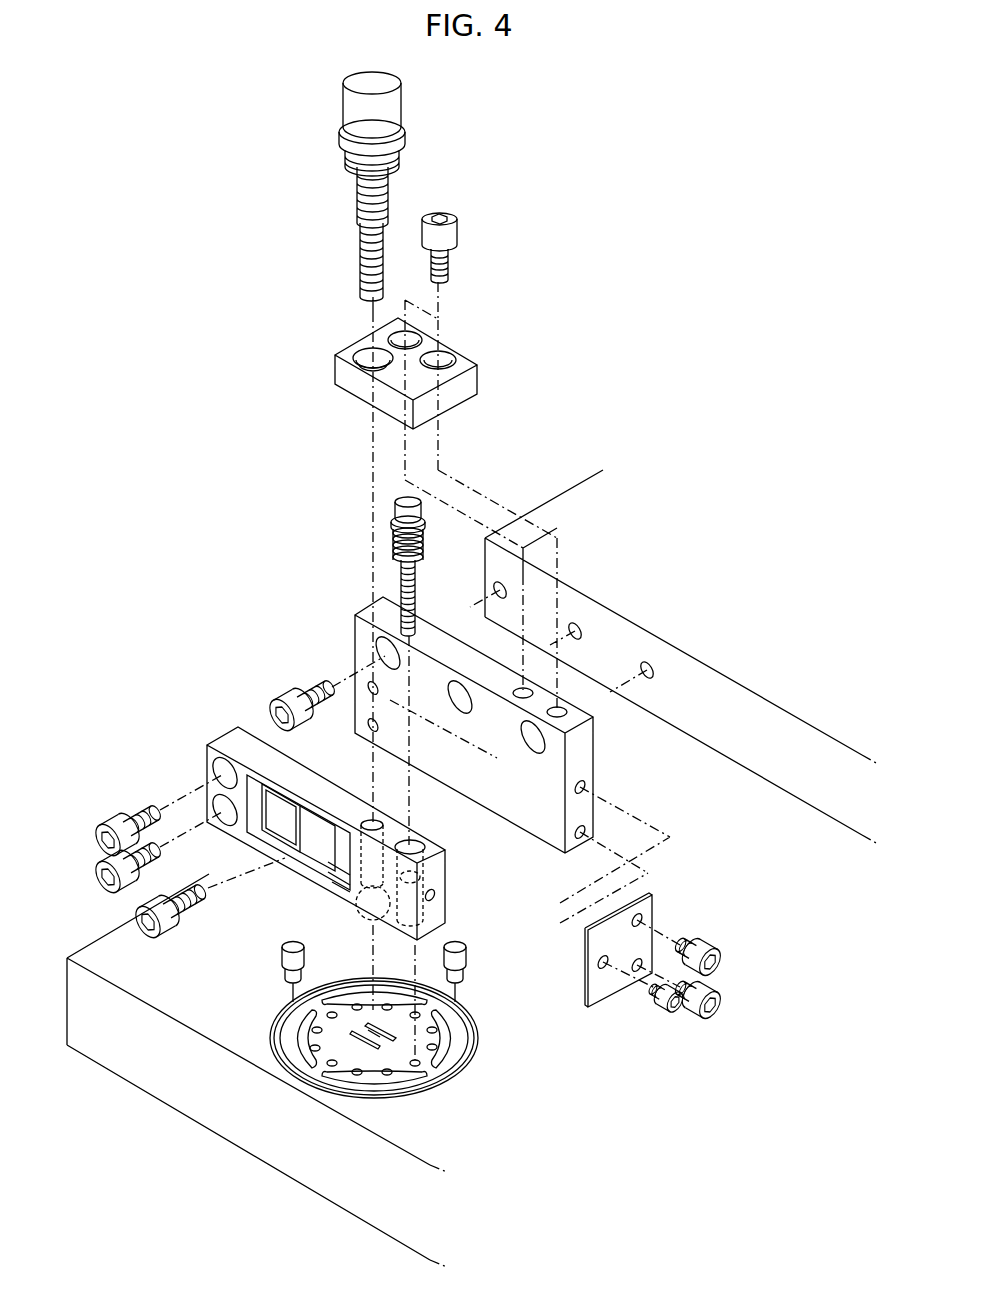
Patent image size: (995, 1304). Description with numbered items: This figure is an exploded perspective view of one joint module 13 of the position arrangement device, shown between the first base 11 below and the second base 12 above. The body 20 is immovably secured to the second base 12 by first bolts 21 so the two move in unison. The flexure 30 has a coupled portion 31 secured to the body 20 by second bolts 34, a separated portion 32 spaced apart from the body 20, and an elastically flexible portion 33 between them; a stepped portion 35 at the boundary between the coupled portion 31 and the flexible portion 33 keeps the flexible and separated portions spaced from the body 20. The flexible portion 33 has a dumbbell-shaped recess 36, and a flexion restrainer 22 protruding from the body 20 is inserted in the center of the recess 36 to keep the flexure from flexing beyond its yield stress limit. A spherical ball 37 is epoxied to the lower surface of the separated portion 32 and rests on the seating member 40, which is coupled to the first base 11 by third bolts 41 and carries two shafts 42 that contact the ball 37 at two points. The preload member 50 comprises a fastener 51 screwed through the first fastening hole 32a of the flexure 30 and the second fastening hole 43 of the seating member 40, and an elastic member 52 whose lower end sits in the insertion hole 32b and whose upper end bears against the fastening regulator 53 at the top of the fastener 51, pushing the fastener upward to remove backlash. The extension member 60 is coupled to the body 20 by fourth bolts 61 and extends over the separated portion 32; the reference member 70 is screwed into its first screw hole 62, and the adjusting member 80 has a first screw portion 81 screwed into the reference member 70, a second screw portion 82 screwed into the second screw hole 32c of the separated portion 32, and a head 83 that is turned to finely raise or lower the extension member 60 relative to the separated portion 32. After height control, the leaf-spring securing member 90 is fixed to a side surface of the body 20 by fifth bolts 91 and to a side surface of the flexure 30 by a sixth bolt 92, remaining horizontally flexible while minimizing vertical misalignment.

The first base 11 is at (188, 1098).
The second base 12 is at (586, 492).
The joint module 13 is at (228, 418).
The body 20 is at (368, 614).
The first bolts 21 is at (275, 695).
The flexion restrainer 22 is at (168, 921).
The flexure 30 is at (316, 820).
The coupled portion 31 is at (230, 740).
The separated portion 32 is at (429, 843).
The first fastening hole 32a is at (437, 897).
The insertion hole 32b is at (415, 843).
The second screw hole 32c is at (372, 818).
The flexible portion 33 is at (284, 860).
The second bolts 34 is at (112, 822).
The stepped portion 35 is at (276, 747).
The dumbbell-shaped recess 36 is at (304, 841).
The spherical ball 37 is at (357, 910).
The seating member 40 is at (390, 1036).
The third bolts 41 is at (464, 955).
The shafts 42 is at (376, 1055).
The second fastening hole 43 is at (416, 1070).
The preload member 50 is at (455, 543).
The fastener 51 is at (437, 598).
The elastic member 52 is at (426, 549).
The fastening regulator 53 is at (412, 502).
The extension member 60 is at (395, 373).
The fourth bolts 61 is at (453, 236).
The first screw hole 62 is at (357, 358).
The reference member 70 is at (356, 148).
The adjusting member 80 is at (321, 186).
The first screw portion 81 is at (358, 190).
The second screw portion 82 is at (362, 258).
The head 83 is at (353, 105).
The securing member 90 is at (650, 907).
The fifth bolts 91 is at (703, 950).
The sixth bolt 92 is at (668, 1008).